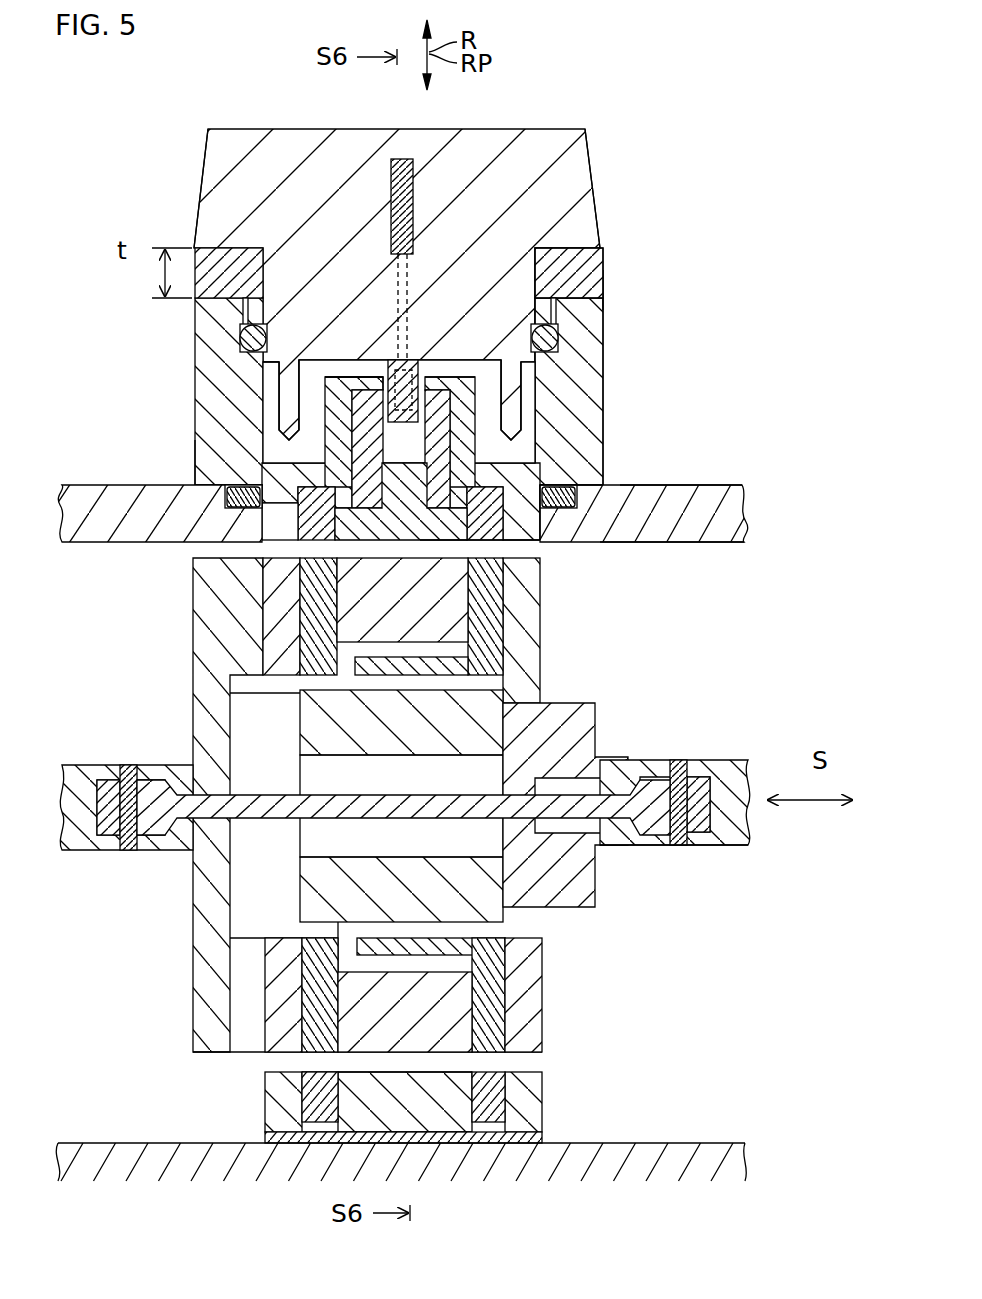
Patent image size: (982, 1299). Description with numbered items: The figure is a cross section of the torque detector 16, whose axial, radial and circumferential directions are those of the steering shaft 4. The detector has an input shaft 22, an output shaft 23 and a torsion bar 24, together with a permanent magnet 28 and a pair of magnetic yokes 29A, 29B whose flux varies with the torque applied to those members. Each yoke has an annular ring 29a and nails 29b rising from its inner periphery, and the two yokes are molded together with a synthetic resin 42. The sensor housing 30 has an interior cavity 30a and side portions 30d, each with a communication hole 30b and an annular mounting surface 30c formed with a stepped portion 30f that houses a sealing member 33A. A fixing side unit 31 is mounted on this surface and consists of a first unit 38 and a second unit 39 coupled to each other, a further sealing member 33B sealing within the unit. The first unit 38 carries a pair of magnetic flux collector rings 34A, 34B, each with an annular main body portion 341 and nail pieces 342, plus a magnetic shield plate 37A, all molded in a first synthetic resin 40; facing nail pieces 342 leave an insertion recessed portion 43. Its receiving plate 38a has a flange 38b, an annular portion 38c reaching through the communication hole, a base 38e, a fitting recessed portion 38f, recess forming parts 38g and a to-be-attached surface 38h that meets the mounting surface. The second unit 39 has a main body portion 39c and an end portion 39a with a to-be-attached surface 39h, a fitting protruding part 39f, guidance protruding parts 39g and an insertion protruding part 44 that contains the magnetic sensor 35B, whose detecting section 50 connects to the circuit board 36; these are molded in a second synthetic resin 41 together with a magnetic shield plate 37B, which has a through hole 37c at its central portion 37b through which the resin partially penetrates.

The steering shaft 4 is at (758, 828).
The torque detector 16 is at (638, 152).
The input shaft 22 is at (722, 847).
The output shaft 23 is at (83, 842).
The torsion bar 24 is at (270, 813).
The permanent magnet 28 is at (488, 893).
The magnetic yoke 29A is at (493, 1008).
The magnetic yoke 29B is at (314, 1003).
The ring 29a is at (318, 1042).
The nails 29b is at (355, 950).
The sensor housing 30 is at (752, 522).
The cavity 30a is at (705, 562).
The communication hole 30b is at (505, 545).
The mounting surface 30c is at (573, 472).
The side portions 30d is at (718, 484).
The stepped portion 30f is at (575, 455).
The fixing side unit 31 is at (679, 195).
The sealing member 33A is at (580, 503).
The sealing member 33B is at (560, 338).
The magnetic flux collector ring 34A is at (507, 600).
The magnetic flux collector ring 34B is at (330, 597).
The magnetic sensor 35B is at (365, 410).
The circuit board 36 is at (392, 165).
The magnetic shield plate 37A is at (534, 1137).
The magnetic shield plate 37B is at (608, 266).
The central portion 37b is at (604, 262).
The through hole 37c is at (527, 395).
The first unit 38 is at (192, 378).
The receiving plate 38a is at (582, 368).
The flange 38b is at (590, 388).
The annular portion 38c is at (537, 1094).
The base 38e is at (205, 292).
The fitting recessed portion 38f is at (270, 372).
The recess forming parts 38g is at (340, 377).
The to-be-attached surface 38h is at (285, 495).
The second unit 39 is at (194, 211).
The end portion 39a is at (603, 288).
The main body portion 39c is at (580, 129).
The fitting protruding part 39f is at (243, 312).
The guidance protruding parts 39g is at (288, 438).
The to-be-attached surface 39h is at (557, 312).
The first synthetic resin 40 is at (215, 470).
The second synthetic resin 41 is at (215, 164).
The synthetic resin 42 is at (379, 1040).
The insertion recessed portion 43 is at (400, 455).
The insertion protruding part 44 is at (405, 426).
The detecting section 50 is at (388, 338).
The main body portion 341 is at (317, 546).
The nail pieces 342 is at (345, 452).